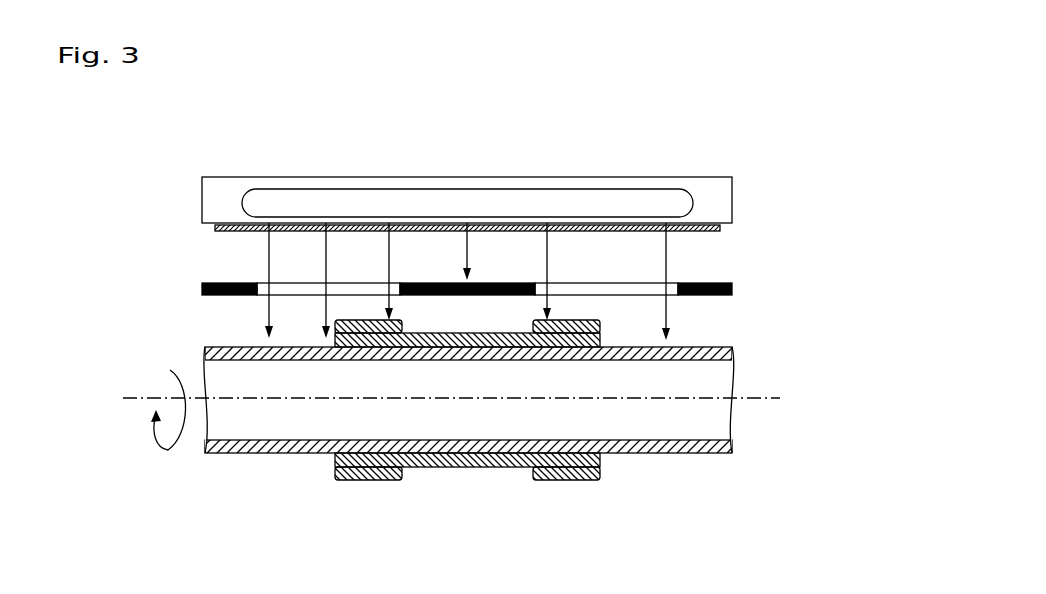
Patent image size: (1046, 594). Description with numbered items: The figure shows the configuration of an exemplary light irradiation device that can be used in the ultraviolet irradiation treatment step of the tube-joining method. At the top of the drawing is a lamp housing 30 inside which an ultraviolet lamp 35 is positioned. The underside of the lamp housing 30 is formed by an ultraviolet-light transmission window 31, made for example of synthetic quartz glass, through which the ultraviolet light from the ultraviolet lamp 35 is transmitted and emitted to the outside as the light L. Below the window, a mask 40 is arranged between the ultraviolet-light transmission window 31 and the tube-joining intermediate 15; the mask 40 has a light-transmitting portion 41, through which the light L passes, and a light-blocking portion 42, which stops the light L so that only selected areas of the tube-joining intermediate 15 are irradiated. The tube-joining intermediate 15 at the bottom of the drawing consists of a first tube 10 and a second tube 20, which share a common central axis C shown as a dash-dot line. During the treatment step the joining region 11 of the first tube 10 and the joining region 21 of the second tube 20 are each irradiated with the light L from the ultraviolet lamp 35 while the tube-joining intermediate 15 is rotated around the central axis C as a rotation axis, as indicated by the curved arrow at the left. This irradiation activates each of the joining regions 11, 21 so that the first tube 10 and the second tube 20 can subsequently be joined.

The lamp housing 30 is at (257, 178).
The ultraviolet lamp 35 is at (465, 203).
The ultraviolet-light transmission window 31 is at (708, 223).
The light L is at (666, 250).
The mask 40 is at (403, 274).
The light-transmitting portion 41 is at (260, 300).
The light-blocking portion 42 is at (227, 283).
The tube-joining intermediate 15 is at (735, 327).
The second tube 20 is at (497, 446).
The joining region of the second tube 21 is at (302, 455).
The first tube 10 is at (460, 468).
The joining region of the first tube 11 is at (365, 482).
The central axis C is at (755, 400).